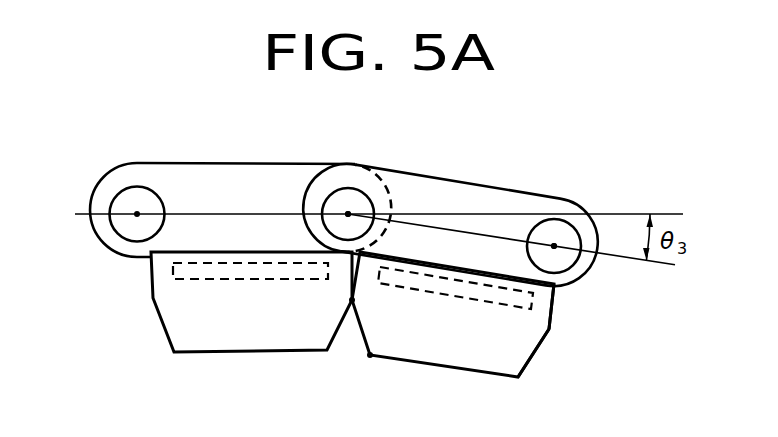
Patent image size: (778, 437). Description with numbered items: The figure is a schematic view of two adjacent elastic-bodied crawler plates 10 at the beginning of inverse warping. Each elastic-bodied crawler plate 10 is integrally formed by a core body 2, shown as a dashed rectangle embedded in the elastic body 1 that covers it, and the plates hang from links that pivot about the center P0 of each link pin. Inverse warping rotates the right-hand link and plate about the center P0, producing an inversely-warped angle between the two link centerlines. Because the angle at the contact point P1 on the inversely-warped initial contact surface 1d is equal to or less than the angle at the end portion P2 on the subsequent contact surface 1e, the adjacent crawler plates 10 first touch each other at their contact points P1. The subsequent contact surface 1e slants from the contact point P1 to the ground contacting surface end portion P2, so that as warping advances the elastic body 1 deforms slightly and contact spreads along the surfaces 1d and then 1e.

The elastic-bodied crawler plate 10 is at (97, 272).
The elastic body 1 is at (170, 318).
The core body 2 is at (177, 278).
The inversely-warped initial contact surface 1d is at (551, 320).
The subsequent contact surface 1e is at (525, 368).
The center of link pin P0 is at (347, 213).
The contact point P1 is at (353, 301).
The end portion of the ground contacting surface P2 is at (370, 356).